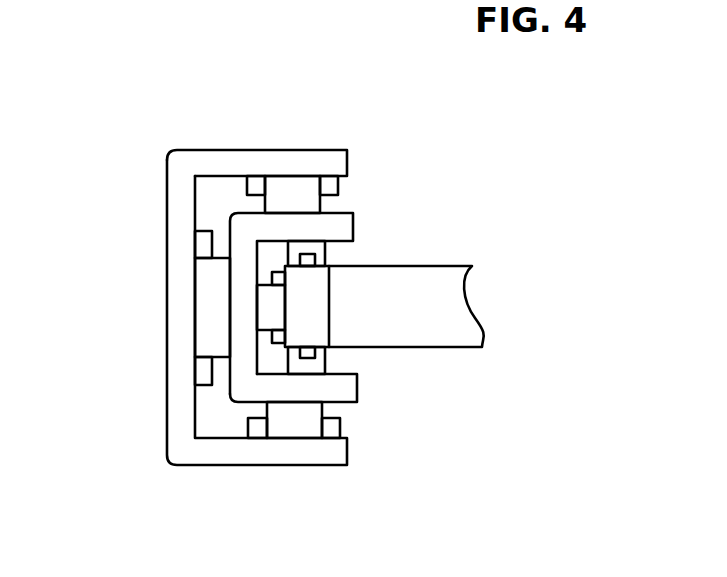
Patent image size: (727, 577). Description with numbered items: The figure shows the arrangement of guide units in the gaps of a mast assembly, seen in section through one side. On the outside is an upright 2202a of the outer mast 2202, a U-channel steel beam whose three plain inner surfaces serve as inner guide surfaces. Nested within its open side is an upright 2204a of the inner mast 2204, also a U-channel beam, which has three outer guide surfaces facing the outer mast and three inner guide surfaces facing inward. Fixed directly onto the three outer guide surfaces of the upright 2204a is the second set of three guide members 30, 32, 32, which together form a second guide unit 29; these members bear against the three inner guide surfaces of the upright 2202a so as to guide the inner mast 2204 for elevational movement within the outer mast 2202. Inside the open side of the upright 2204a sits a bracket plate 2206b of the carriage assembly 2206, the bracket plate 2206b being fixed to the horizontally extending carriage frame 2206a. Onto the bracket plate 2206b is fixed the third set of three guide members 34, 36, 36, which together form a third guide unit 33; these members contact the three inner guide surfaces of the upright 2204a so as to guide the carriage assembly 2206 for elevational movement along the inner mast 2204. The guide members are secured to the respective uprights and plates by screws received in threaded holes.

The second guide unit 29 is at (338, 140).
The guide member 30 is at (213, 295).
The guide member 32 is at (293, 193).
The third guide unit 33 is at (408, 222).
The guide member 34 is at (263, 317).
The guide member 36 is at (362, 243).
The outer mast 2202 is at (296, 144).
The upright 2202a is at (202, 160).
The inner mast 2204 is at (362, 387).
The upright 2204a is at (243, 393).
The carriage assembly 2206 is at (398, 265).
The carriage frame 2206a is at (462, 322).
The bracket plate 2206b is at (318, 305).